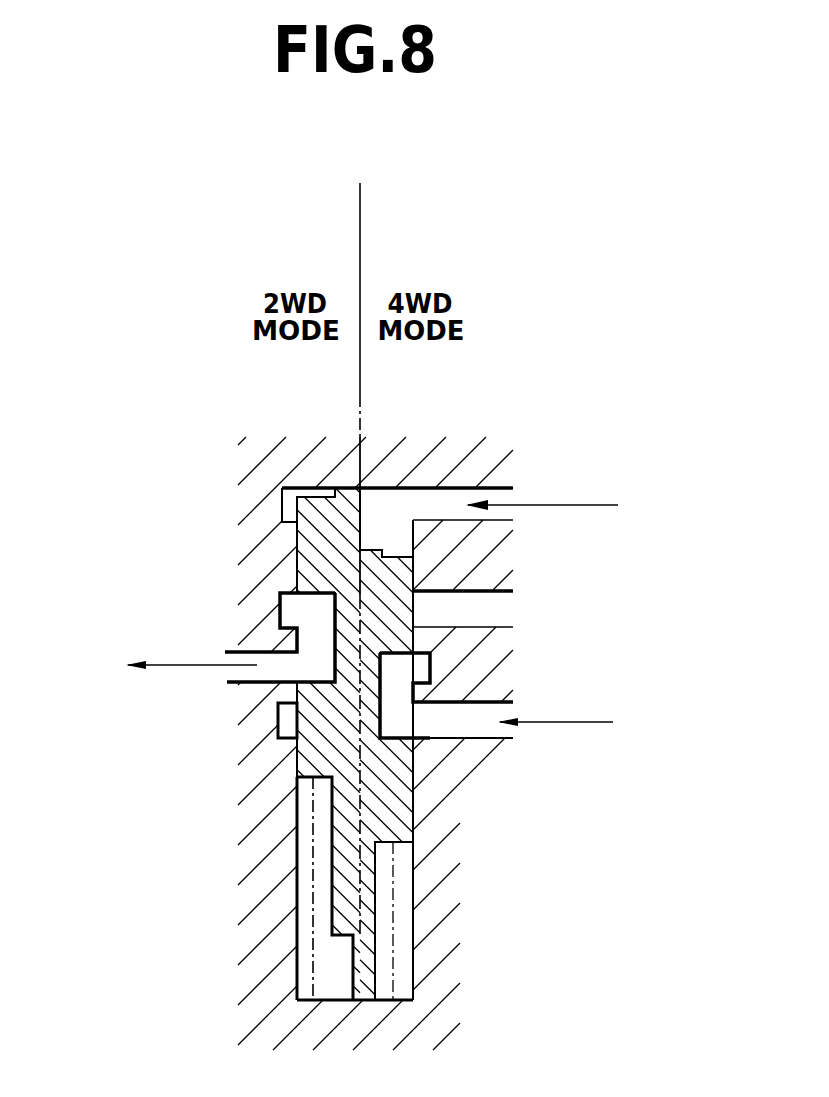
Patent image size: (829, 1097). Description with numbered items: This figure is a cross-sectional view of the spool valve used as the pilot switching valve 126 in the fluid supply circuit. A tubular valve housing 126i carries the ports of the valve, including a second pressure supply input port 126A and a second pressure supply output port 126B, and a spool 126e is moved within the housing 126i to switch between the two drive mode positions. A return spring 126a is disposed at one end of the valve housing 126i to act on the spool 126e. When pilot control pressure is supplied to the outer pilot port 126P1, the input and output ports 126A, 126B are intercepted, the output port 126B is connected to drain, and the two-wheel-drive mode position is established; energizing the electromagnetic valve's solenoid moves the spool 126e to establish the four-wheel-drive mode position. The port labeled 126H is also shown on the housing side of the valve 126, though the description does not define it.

The pilot switching valve 126 is at (270, 716).
The outer pilot port 126P1 is at (471, 452).
The high pressure port 126H is at (528, 604).
The second pressure supply input port 126A is at (510, 727).
The second pressure supply output port 126B is at (185, 616).
The tubular valve housing 126i is at (166, 722).
The spool 126e is at (194, 877).
The return spring 126a is at (174, 888).